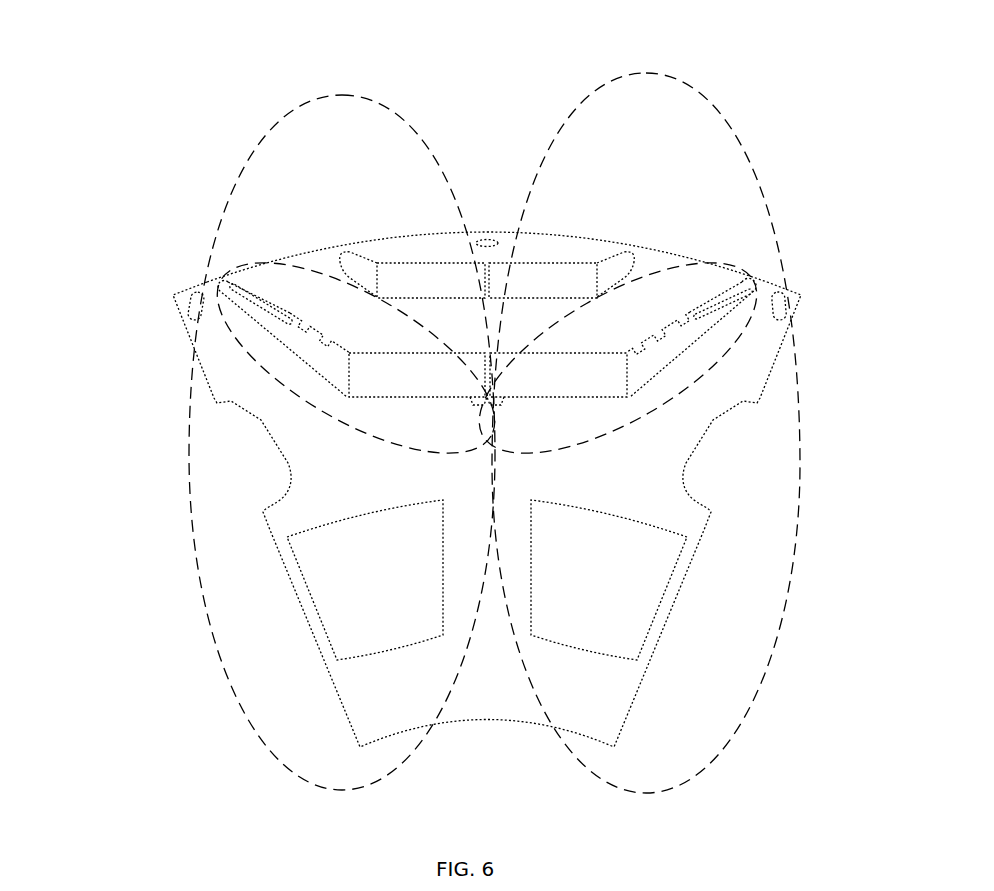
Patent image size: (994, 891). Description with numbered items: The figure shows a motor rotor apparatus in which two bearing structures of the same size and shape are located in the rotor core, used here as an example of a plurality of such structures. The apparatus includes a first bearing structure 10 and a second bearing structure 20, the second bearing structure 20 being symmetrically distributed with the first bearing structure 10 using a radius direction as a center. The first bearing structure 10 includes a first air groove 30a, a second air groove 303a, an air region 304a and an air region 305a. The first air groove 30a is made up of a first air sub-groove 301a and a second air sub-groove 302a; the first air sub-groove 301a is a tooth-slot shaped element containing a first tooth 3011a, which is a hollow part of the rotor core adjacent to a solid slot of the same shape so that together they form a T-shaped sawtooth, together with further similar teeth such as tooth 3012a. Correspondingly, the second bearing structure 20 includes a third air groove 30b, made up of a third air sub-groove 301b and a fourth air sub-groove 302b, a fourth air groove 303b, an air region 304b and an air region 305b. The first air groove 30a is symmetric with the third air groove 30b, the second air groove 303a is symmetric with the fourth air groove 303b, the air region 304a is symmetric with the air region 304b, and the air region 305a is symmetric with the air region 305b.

The first bearing structure 10 is at (345, 95).
The second bearing structure 20 is at (647, 72).
The first air groove 30a is at (303, 270).
The third air groove 30b is at (593, 305).
The first air sub-groove 301a is at (215, 268).
The third air sub-groove 301b is at (710, 313).
The first tooth 3011a is at (295, 317).
The tooth 3012a is at (325, 342).
The second air sub-groove 302a is at (407, 383).
The fourth air sub-groove 302b is at (547, 380).
The second air groove 303a is at (427, 280).
The fourth air groove 303b is at (580, 272).
The air region 304a is at (192, 300).
The air region 304b is at (778, 305).
The air region 305a is at (372, 595).
The air region 305b is at (548, 597).